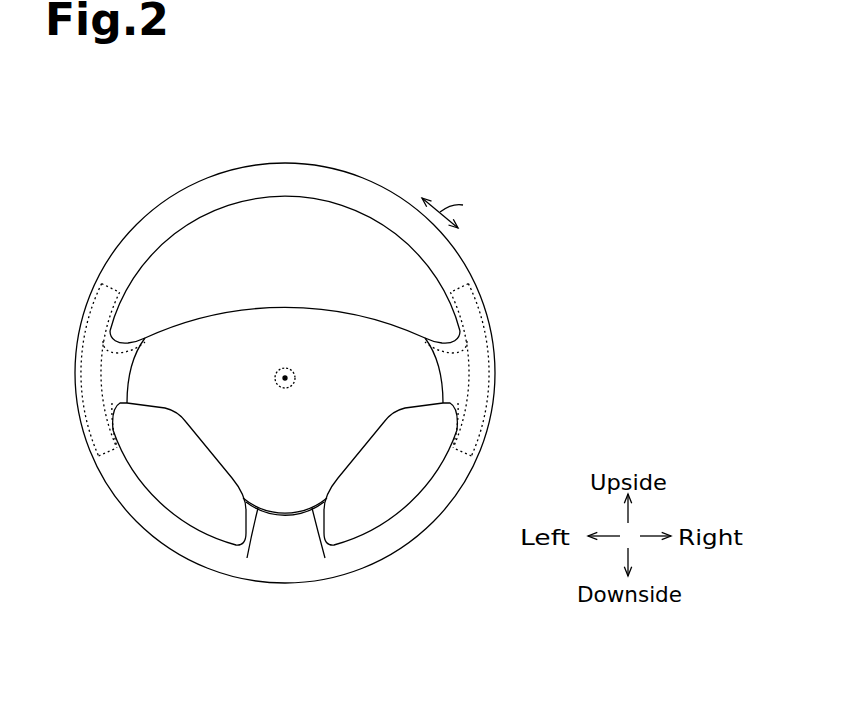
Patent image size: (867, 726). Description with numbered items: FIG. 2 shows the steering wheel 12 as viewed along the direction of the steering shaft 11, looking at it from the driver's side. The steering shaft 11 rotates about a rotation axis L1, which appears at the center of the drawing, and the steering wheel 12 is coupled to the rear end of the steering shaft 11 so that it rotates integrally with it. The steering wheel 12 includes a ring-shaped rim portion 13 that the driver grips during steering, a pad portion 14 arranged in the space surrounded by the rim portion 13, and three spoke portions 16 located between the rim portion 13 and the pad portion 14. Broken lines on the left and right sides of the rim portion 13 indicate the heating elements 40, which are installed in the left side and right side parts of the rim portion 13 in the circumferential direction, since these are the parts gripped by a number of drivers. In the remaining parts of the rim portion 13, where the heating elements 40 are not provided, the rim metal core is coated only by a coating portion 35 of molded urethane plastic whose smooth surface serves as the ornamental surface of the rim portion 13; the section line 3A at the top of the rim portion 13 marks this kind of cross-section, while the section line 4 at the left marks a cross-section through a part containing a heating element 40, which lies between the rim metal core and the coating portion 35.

The steering wheel 12 is at (428, 157).
The rim portion 13 is at (285, 359).
The coating portion 35 is at (177, 200).
The pad portion 14 is at (252, 318).
The spoke portions 16 is at (106, 406).
The heating elements 40 is at (78, 431).
The steering shaft 11 is at (282, 390).
The rotation axis L1 is at (288, 368).
The section line 4 is at (97, 300).
The section line 3A is at (283, 161).